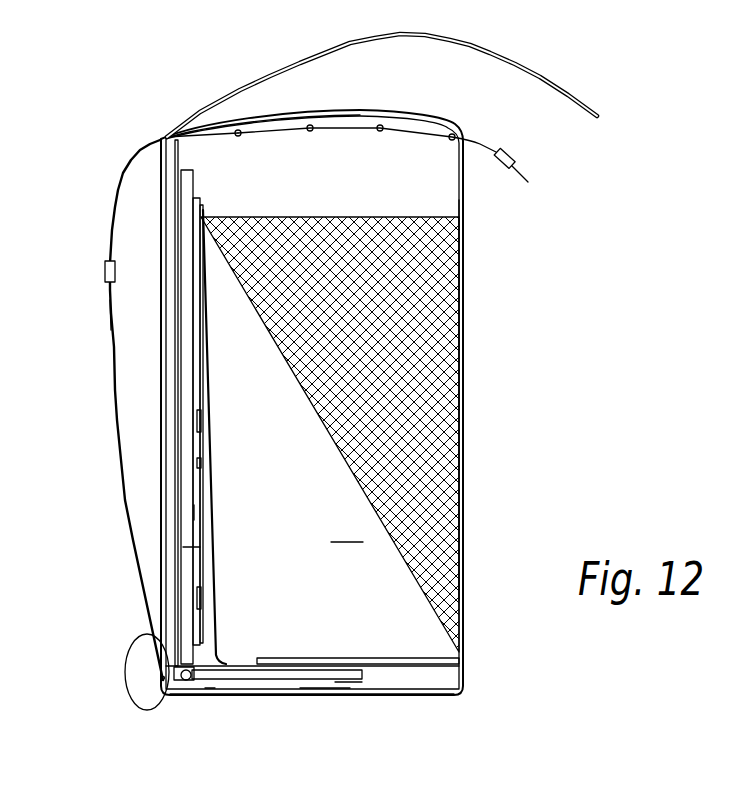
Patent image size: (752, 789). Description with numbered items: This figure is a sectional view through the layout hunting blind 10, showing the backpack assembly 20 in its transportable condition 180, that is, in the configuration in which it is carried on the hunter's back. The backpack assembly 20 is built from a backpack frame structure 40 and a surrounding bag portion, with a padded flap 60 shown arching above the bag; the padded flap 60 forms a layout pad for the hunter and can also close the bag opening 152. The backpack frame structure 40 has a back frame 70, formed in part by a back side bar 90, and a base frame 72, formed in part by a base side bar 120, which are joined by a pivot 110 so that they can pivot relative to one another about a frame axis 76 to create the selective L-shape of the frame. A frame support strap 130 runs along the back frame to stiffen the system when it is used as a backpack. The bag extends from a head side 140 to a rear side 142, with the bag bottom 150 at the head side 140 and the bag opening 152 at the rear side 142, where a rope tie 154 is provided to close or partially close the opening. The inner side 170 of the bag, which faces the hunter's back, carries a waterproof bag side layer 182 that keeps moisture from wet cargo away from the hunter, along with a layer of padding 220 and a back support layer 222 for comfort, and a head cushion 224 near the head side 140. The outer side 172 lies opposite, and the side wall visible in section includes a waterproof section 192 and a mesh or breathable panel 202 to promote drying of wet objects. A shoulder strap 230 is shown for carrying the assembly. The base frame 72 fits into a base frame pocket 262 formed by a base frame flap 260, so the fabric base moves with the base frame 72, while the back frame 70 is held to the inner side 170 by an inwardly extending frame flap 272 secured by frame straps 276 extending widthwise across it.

The layout hunting blind 10 is at (570, 217).
The backpack assembly 20 is at (493, 457).
The backpack frame structure 40 is at (210, 684).
The padded flap 60 is at (500, 46).
The back frame 70 is at (194, 511).
The base frame 72 is at (342, 684).
The frame axis 76 is at (187, 682).
The back side bar 90 is at (210, 547).
The pivot 110 is at (162, 678).
The base side bar 120 is at (288, 676).
The frame support strap 130 is at (213, 590).
The head side 140 is at (440, 698).
The rear side 142 is at (253, 120).
The bag bottom 150 is at (323, 697).
The bag opening 152 is at (370, 113).
The rope tie 154 is at (480, 143).
The inner side 170 is at (160, 396).
The outer side 172 is at (461, 530).
The transportable condition 180 is at (532, 295).
The waterproof bag side layer 182 is at (182, 347).
The waterproof section 192 is at (347, 530).
The mesh or breathable panel 202 is at (403, 397).
The layer of padding 220 is at (170, 298).
The back support layer 222 is at (163, 522).
The head cushion 224 is at (137, 650).
The shoulder strap 230 is at (113, 212).
The base frame flap 260 is at (320, 659).
The base frame pocket 262 is at (430, 678).
The frame flap 272 is at (197, 467).
The frame strap 276 is at (198, 422).